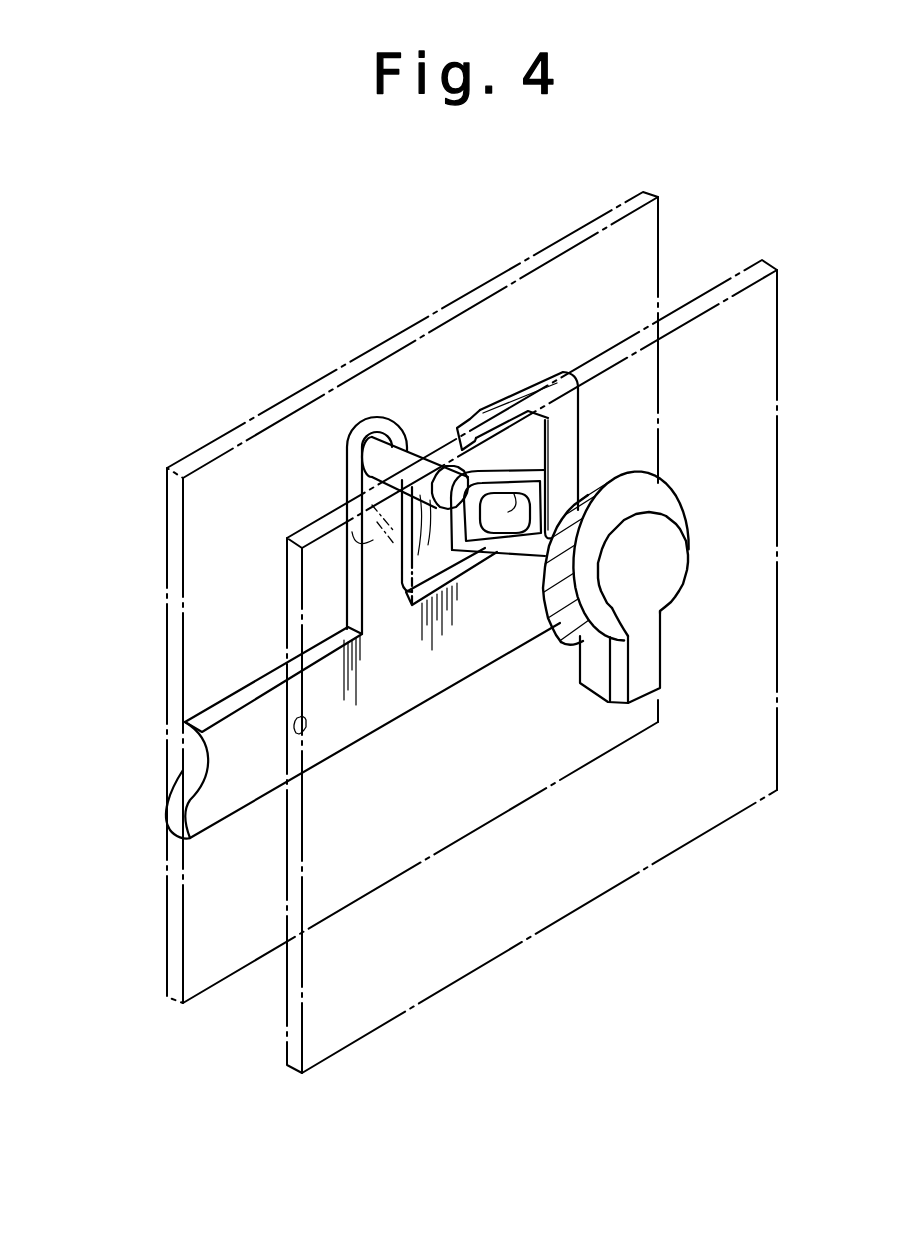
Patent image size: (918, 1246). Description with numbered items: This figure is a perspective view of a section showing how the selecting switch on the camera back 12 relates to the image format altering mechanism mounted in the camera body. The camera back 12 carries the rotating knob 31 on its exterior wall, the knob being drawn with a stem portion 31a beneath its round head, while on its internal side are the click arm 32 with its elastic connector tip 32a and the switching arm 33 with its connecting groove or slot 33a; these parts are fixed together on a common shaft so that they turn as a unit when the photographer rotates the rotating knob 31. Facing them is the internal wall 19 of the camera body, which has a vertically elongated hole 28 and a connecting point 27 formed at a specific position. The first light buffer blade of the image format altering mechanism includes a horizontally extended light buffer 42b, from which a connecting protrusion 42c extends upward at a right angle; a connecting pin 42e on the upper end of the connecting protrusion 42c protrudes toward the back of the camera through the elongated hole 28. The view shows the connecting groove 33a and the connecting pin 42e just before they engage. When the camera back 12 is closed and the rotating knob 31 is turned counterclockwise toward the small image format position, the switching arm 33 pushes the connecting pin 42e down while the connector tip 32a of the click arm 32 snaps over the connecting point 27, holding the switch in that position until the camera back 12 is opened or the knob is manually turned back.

The internal wall 19 is at (164, 527).
The camera back 12 is at (297, 631).
The connecting point 27 is at (300, 532).
The light buffer 42b is at (347, 735).
The connecting protrusion 42c is at (353, 585).
The connecting pin 42e is at (428, 500).
The vertically elongated hole 28 is at (402, 610).
The switching arm 33 is at (513, 550).
The connecting groove 33a is at (525, 492).
The click arm 32 is at (563, 437).
The connector tip 32a is at (473, 415).
The rotating knob 31 is at (662, 563).
The stem of knob 31a is at (653, 653).